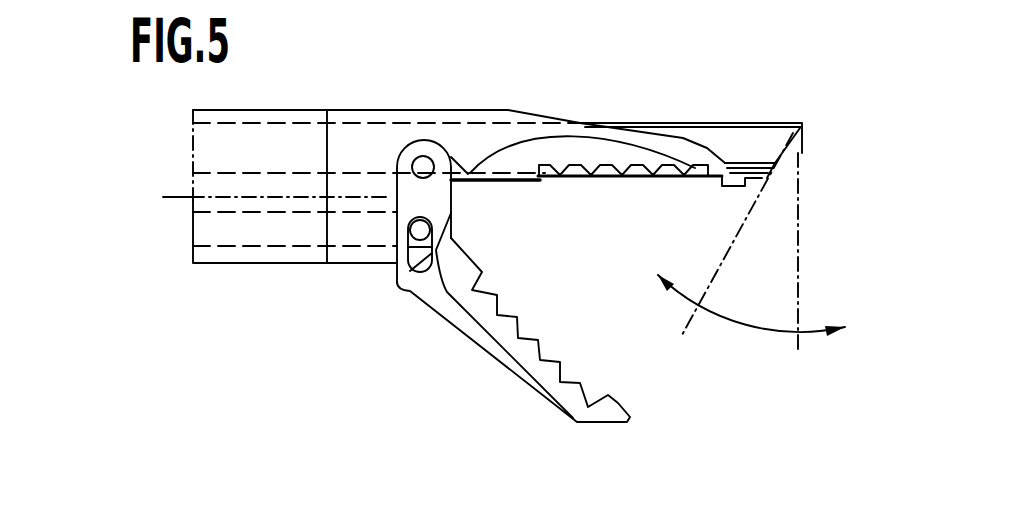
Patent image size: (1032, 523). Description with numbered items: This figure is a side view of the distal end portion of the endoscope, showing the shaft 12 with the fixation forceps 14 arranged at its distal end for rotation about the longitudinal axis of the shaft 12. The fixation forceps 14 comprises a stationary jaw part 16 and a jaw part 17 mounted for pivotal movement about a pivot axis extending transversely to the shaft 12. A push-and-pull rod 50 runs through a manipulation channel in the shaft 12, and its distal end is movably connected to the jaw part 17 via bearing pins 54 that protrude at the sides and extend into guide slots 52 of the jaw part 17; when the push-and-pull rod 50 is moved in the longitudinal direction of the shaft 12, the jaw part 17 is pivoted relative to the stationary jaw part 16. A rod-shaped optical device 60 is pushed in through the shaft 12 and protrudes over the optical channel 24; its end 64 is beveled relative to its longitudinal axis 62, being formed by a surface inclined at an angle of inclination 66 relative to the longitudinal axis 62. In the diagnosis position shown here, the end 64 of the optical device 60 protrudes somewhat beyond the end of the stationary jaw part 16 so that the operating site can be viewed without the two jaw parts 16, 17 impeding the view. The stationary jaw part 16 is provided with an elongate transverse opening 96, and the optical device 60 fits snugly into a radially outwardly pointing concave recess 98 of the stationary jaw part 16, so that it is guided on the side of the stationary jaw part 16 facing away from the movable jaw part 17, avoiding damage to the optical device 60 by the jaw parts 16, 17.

The shaft 12 is at (312, 72).
The fixation forceps 14 is at (596, 75).
The stationary jaw part 16 is at (490, 138).
The jaw part 17 is at (541, 0).
The optical channel 24 is at (206, 173).
The push-and-pull rod 50 is at (230, 228).
The guide slots 52 is at (410, 291).
The bearing pins 54 is at (415, 228).
The optical device 60 is at (758, 143).
The longitudinal axis 62 is at (174, 297).
The end 64 is at (790, 153).
The angle of inclination 66 is at (767, 332).
The elongate transverse opening 96 is at (762, 0).
The concave recess 98 is at (687, 140).